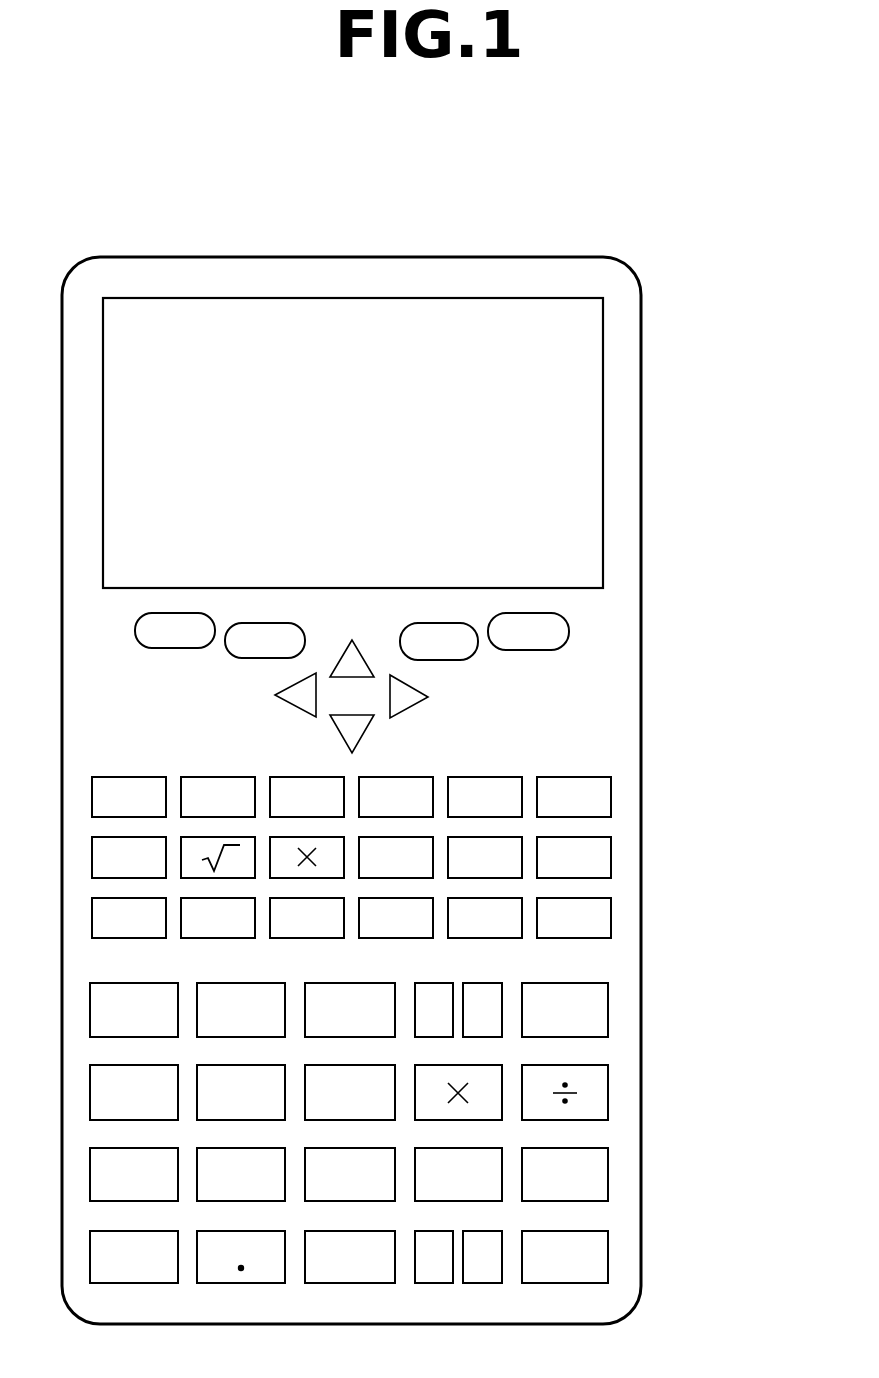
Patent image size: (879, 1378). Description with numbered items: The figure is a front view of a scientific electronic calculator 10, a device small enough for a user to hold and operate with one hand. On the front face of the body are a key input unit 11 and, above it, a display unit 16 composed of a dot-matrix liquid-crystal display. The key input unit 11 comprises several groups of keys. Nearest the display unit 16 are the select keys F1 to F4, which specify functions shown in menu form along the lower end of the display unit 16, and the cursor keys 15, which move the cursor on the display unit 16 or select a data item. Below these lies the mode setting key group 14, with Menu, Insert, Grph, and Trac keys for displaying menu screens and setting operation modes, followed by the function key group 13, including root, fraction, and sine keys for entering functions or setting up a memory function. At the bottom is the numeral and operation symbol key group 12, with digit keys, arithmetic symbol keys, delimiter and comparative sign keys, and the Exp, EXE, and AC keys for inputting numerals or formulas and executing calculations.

The scientific electronic calculator 10 is at (634, 250).
The key input unit 11 is at (743, 605).
The numeral and operation symbol key group 12 is at (658, 980).
The function key group 13 is at (662, 837).
The mode setting key group 14 is at (662, 762).
The cursor keys 15 is at (353, 697).
The display unit 16 is at (583, 432).